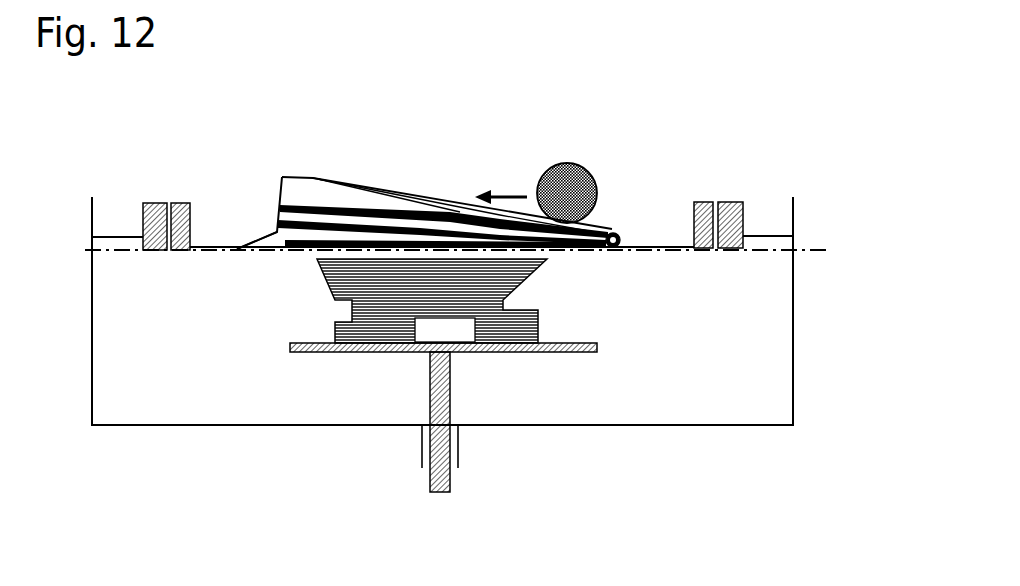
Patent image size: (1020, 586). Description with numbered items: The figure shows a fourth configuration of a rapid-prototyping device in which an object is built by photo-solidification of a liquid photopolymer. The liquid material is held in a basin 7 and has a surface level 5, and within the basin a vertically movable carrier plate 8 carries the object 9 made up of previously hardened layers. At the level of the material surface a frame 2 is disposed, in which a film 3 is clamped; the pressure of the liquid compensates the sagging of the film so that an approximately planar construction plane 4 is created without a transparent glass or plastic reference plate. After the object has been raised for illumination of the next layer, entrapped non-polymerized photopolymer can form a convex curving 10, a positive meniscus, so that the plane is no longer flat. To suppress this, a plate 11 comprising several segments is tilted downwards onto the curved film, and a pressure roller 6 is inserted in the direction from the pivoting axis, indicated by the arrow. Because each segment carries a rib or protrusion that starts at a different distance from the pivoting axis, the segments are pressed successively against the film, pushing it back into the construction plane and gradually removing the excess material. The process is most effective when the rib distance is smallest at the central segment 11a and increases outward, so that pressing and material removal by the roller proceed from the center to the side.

The frame 2 is at (155, 203).
The film 3 is at (217, 249).
The construction plane 4 is at (808, 247).
The surface level 5 is at (763, 235).
The pressure roller 6 is at (597, 187).
The basin 7 is at (305, 427).
The carrier plate 8 is at (553, 353).
The object 9 is at (540, 265).
The convex curving 10 is at (364, 245).
The plate 11 is at (332, 197).
The central segment 11a is at (245, 248).